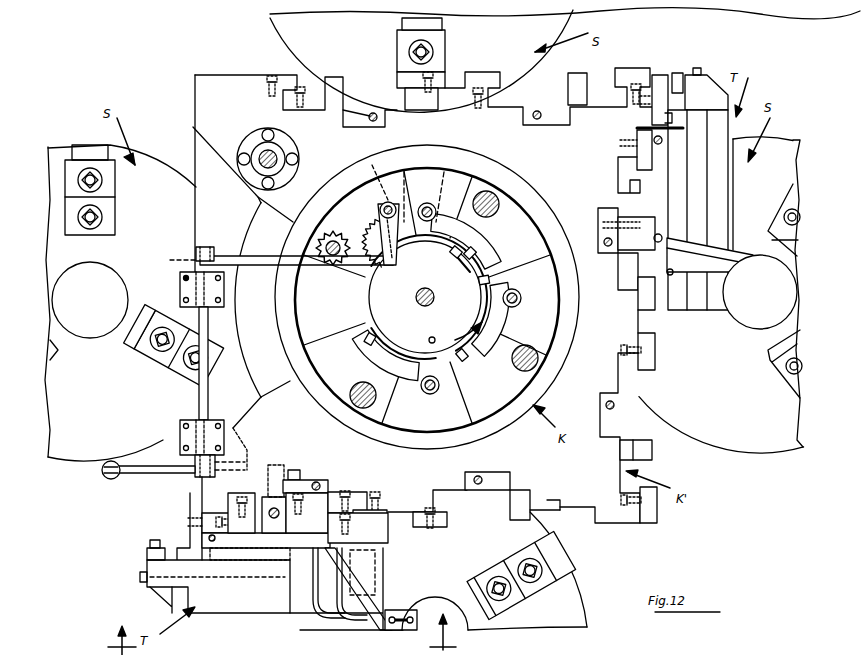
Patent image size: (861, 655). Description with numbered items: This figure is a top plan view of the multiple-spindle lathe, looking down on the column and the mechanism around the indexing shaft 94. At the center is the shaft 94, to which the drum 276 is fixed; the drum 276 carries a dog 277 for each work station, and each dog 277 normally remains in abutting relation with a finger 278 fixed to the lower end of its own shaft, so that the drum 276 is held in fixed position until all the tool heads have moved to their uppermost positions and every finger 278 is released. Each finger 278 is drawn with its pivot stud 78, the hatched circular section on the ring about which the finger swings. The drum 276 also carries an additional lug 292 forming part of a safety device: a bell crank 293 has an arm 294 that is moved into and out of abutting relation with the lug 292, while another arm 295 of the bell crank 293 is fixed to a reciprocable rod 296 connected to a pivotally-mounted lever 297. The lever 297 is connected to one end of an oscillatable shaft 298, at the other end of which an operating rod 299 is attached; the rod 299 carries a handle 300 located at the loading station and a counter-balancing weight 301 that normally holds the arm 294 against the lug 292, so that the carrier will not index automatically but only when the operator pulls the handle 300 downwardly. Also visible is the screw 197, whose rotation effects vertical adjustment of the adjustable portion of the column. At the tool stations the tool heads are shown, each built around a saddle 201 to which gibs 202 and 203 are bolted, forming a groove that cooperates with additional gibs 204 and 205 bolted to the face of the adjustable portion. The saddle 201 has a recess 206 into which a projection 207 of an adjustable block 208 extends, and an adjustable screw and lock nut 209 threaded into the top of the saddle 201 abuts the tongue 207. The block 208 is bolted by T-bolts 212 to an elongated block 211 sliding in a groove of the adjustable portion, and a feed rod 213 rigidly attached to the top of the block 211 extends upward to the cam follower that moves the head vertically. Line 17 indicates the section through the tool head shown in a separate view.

The line 17— 17 is at (279, 628).
The pivot studs 78 is at (493, 212).
The shaft 94 is at (420, 306).
The screw 197 is at (282, 152).
The saddle 201 is at (390, 535).
The gib 202 is at (243, 498).
The gib 203 is at (348, 494).
The gib 204 is at (205, 514).
The gib 205 is at (380, 512).
The recess 206 is at (380, 494).
The projection 207 is at (305, 541).
The adjustable block 208 is at (328, 495).
The adjustable screw and lock nut 209 is at (276, 470).
The elongated block 211 is at (294, 470).
The T-bolts 212 is at (302, 478).
The feed rod 213 is at (316, 480).
The drum 276 is at (368, 320).
The dog 277 is at (478, 252).
The finger 278 is at (470, 230).
The lug 292 is at (462, 265).
The bell crank 293 is at (398, 245).
The arm 294 is at (455, 258).
The arm 295 is at (408, 268).
The reciprocable rod 296 is at (327, 268).
The lever 297 is at (214, 256).
The oscillatable shaft 298 is at (208, 408).
The operating rod 299 is at (153, 470).
The handle 300 is at (116, 479).
The counter-balancing weight 301 is at (250, 455).